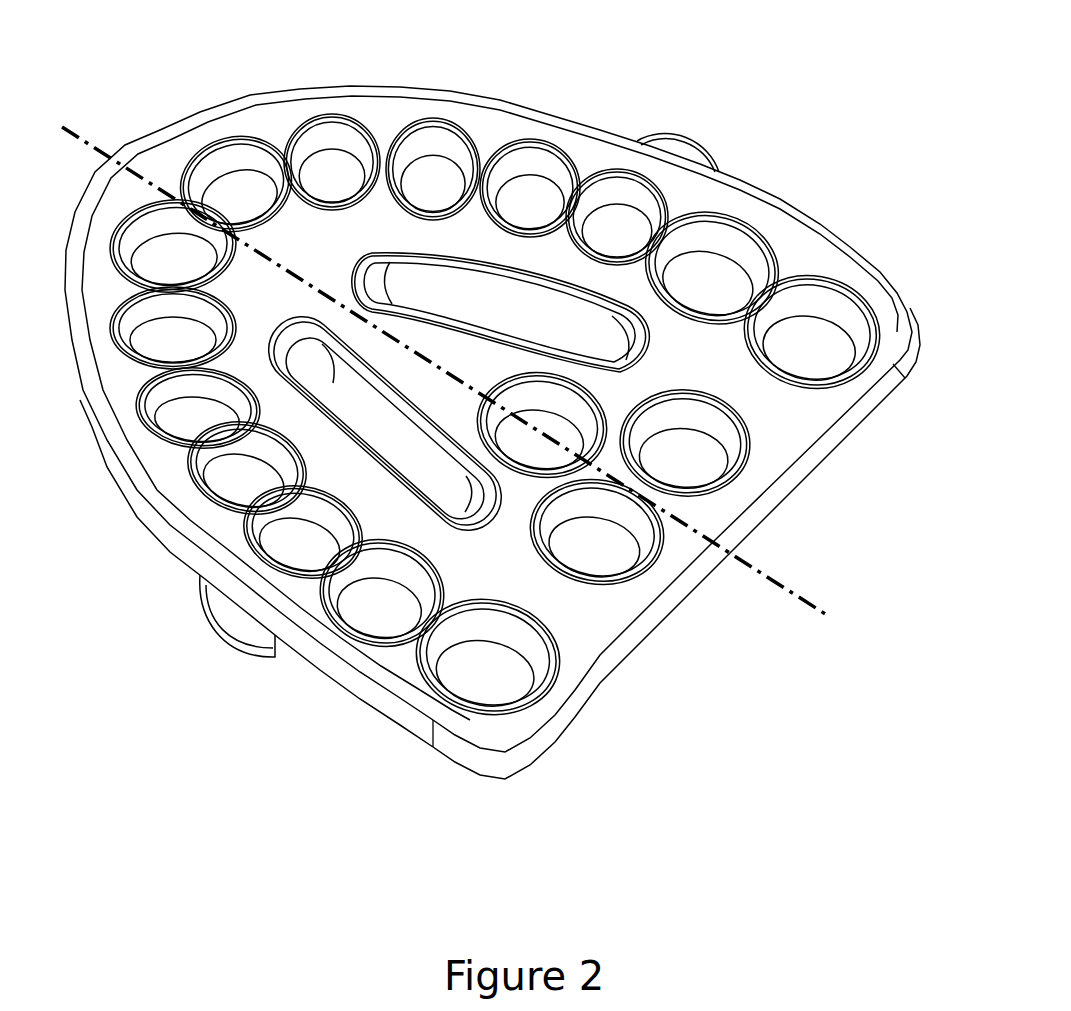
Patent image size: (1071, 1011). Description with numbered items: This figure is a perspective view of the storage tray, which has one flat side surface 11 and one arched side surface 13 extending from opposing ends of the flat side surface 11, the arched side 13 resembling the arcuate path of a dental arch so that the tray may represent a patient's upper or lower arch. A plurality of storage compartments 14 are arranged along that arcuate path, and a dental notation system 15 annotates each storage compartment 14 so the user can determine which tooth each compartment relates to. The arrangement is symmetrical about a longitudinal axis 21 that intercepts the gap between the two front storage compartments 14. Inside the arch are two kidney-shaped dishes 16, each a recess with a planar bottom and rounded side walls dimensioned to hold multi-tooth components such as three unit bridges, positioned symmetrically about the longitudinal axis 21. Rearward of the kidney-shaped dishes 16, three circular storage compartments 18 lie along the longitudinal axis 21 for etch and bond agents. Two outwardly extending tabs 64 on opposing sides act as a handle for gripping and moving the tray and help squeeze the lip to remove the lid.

The flat side surface 11 is at (850, 443).
The arched side surface 13 is at (363, 90).
The storage compartments 14 is at (173, 263).
The dental notation system 15 is at (460, 720).
The kidney-shaped dishes 16 is at (425, 273).
The circular storage compartments 18 is at (563, 427).
The longitudinal axis 21 is at (797, 593).
The outwardly extending tabs 64 is at (680, 160).